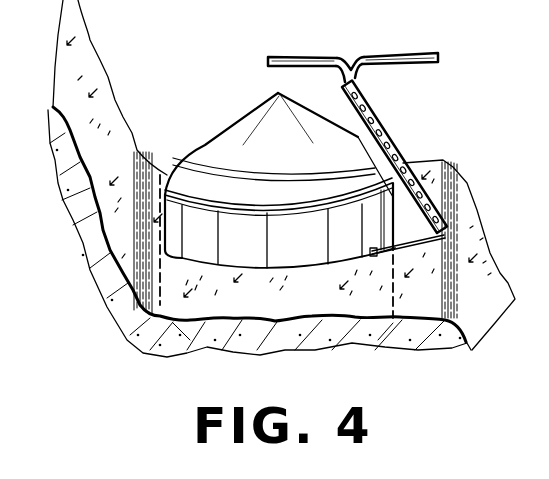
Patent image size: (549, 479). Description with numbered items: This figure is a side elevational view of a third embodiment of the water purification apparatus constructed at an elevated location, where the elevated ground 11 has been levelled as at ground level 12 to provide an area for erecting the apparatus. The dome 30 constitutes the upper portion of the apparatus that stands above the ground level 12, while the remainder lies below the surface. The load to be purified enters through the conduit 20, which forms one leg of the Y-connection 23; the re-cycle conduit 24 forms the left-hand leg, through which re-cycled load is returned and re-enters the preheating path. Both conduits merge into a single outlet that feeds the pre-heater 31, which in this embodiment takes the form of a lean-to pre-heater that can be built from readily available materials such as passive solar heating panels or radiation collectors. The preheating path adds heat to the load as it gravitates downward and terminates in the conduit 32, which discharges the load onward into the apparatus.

The elevated ground 11 is at (110, 283).
The ground level 12 is at (420, 312).
The conduit 20 is at (406, 54).
The Y-connection 23 is at (351, 55).
The re-cycle conduit 24 is at (290, 55).
The dome 30 is at (198, 148).
The pre-heater 31 is at (398, 150).
The conduit 32 is at (373, 248).